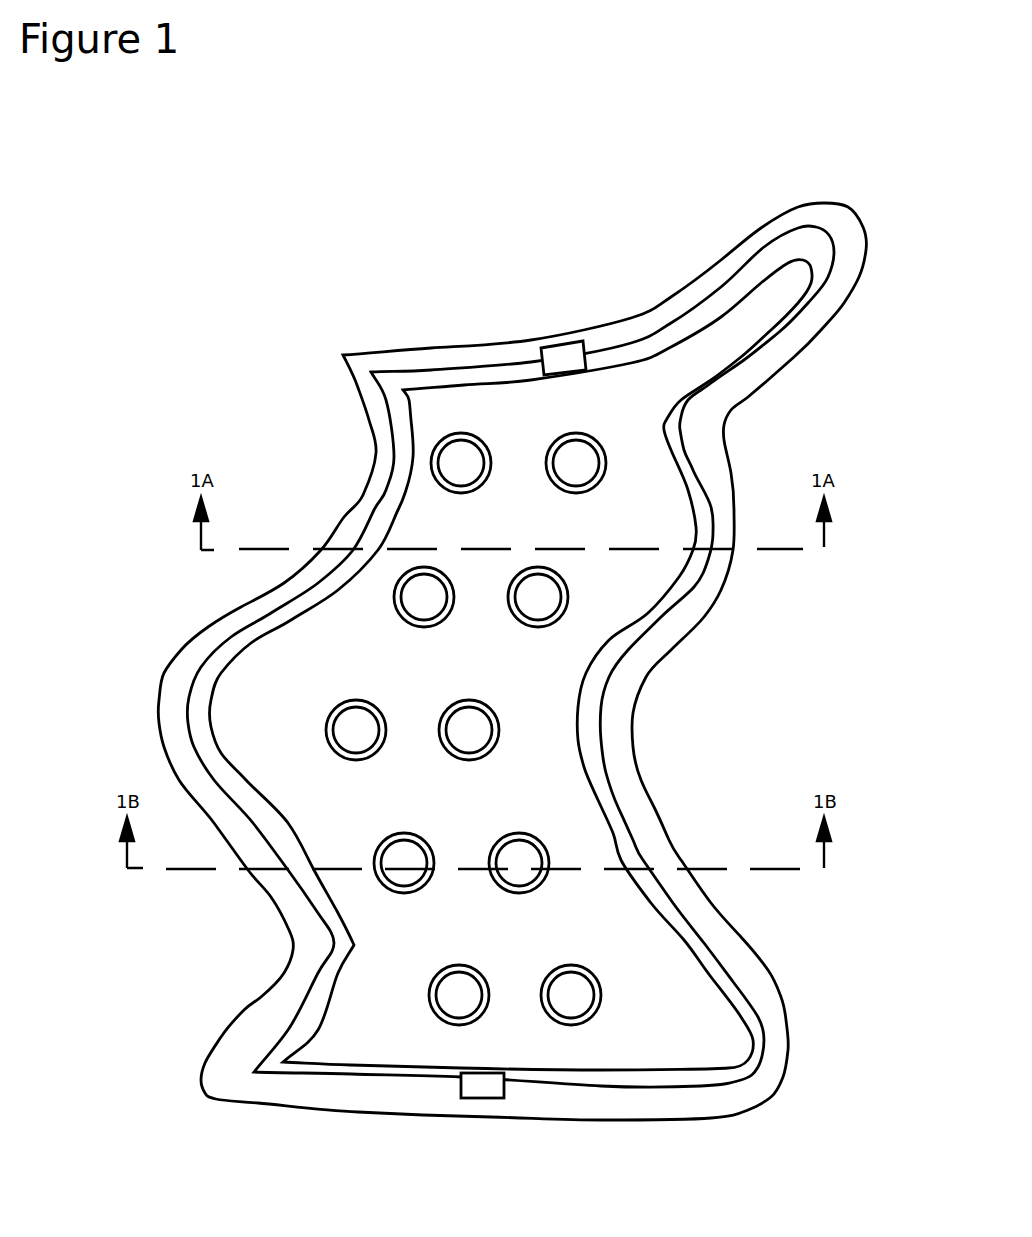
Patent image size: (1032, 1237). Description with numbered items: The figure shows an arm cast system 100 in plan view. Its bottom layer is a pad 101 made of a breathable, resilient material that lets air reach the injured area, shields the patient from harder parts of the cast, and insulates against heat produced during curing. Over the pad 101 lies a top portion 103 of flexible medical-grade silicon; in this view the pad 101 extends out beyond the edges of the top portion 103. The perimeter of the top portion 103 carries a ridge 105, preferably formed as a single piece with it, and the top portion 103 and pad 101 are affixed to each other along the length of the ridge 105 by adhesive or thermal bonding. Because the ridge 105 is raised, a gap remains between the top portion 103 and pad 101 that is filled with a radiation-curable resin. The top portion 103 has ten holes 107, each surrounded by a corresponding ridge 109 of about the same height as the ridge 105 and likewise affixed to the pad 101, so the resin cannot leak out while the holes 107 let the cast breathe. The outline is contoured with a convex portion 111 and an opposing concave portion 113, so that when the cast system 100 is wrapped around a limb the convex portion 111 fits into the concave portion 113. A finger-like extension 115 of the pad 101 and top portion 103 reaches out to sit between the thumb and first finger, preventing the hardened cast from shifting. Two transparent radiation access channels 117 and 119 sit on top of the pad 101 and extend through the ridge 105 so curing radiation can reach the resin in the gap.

The arm cast system 100 is at (516, 161).
The pad 101 is at (840, 227).
The top portion 103 is at (489, 664).
The ridge 105 is at (685, 332).
The holes 107 is at (446, 471).
The ridge 109 is at (440, 440).
The convex portion 111 is at (489, 664).
The concave portion 113 is at (545, 664).
The finger-like extension 115 is at (777, 295).
The radiation access channel 117 is at (560, 353).
The radiation access channel 119 is at (480, 1088).